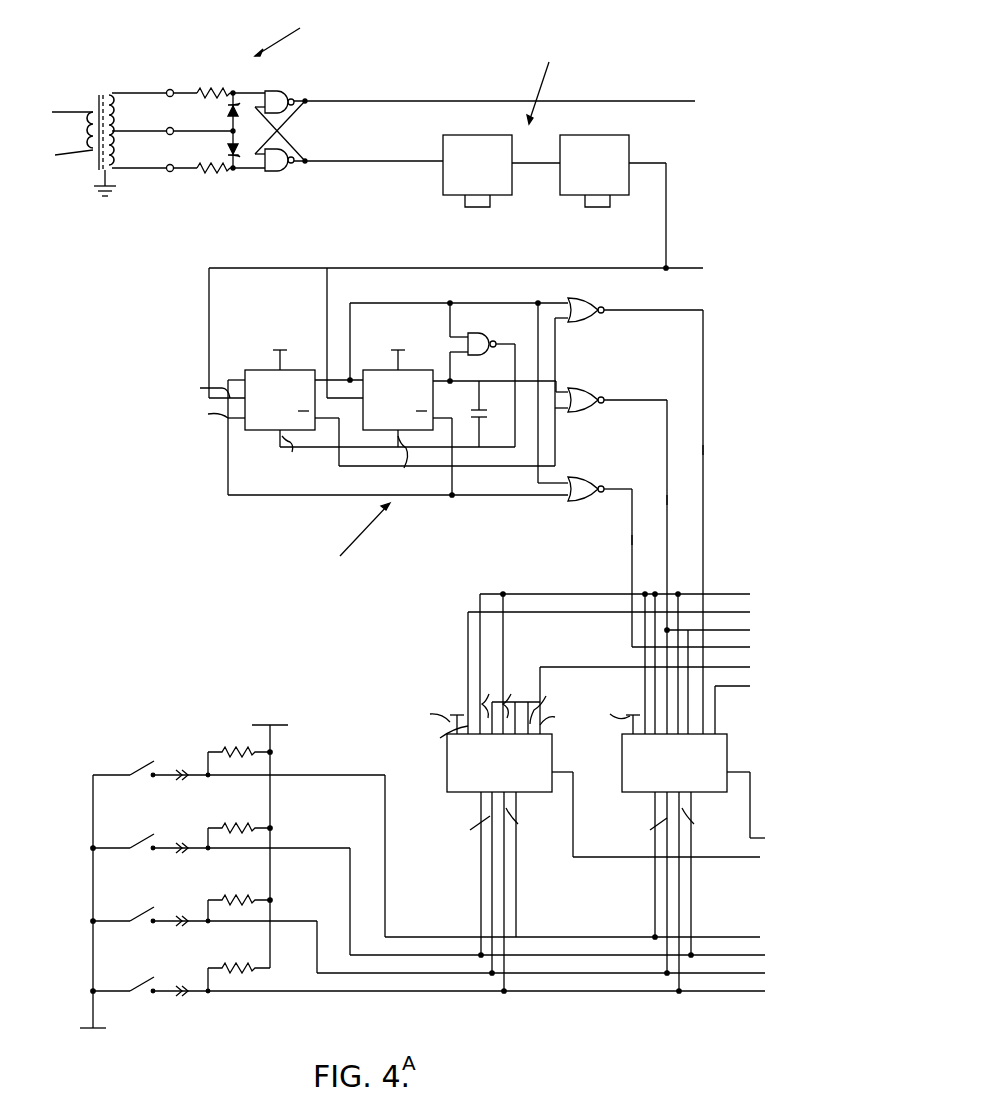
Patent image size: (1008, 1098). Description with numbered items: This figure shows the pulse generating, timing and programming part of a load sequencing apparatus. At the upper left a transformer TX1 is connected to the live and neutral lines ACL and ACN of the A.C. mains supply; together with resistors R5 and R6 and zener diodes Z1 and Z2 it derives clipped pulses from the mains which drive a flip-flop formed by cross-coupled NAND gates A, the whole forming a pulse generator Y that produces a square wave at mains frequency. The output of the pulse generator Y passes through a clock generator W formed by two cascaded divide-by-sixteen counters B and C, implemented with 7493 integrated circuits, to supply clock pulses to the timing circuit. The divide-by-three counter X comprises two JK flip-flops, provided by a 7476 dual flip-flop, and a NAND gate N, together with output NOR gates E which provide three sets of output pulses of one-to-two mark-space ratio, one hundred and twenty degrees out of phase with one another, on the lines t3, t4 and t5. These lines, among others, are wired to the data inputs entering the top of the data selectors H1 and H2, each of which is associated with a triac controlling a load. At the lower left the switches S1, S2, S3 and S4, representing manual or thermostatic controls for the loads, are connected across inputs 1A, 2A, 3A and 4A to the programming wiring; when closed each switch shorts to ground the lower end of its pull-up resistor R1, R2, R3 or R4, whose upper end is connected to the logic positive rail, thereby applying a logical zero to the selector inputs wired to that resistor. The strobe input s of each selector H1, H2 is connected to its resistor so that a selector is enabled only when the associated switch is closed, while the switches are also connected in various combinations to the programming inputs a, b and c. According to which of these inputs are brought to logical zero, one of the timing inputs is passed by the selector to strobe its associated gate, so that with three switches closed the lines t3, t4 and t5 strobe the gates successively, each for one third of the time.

The transformer TX1 is at (120, 132).
The live line ACL is at (51, 112).
The neutral line ACN is at (50, 154).
The pull-up resistor R1 is at (238, 749).
The pull-up resistor R2 is at (238, 823).
The pull-up resistor R3 is at (238, 897).
The pull-up resistor R4 is at (238, 967).
The resistor R5 is at (213, 83).
The resistor R6 is at (213, 179).
The zener diode Z1 is at (222, 110).
The zener diode Z2 is at (222, 151).
The cross-coupled gates A is at (277, 132).
The pulse generator Y is at (286, 30).
The clock generator W is at (539, 80).
The binary counter integrated circuit 7493 is at (508, 141).
The divide by 16 counter B is at (477, 171).
The divide by 16 counter C is at (594, 171).
The divide by 3 counter X is at (357, 540).
The dual JK flip-flop integrated circuit 7476 is at (318, 372).
The NAND gate N is at (489, 337).
The output NOR gates E is at (590, 318).
The output line t3 is at (632, 540).
The output line t4 is at (667, 500).
The output line t5 is at (703, 450).
The data selector H1 is at (447, 760).
The data selector H2 is at (622, 766).
The switch S1 is at (239, 753).
The switch S2 is at (221, 830).
The switch S3 is at (205, 903).
The switch S4 is at (150, 974).
The input 1A is at (182, 755).
The input 2A is at (182, 832).
The input 3A is at (180, 905).
The input 4A is at (177, 976).